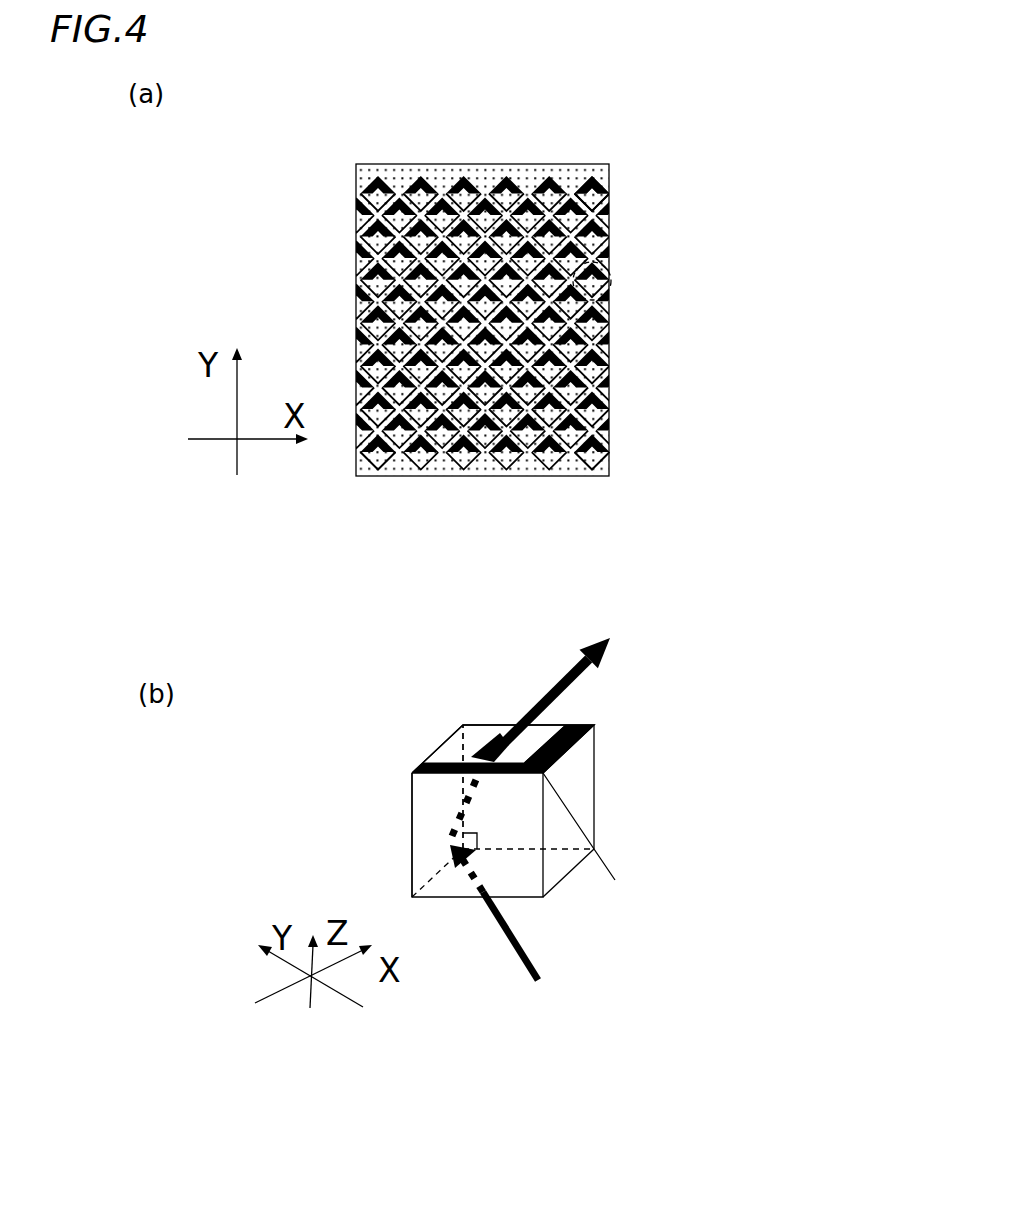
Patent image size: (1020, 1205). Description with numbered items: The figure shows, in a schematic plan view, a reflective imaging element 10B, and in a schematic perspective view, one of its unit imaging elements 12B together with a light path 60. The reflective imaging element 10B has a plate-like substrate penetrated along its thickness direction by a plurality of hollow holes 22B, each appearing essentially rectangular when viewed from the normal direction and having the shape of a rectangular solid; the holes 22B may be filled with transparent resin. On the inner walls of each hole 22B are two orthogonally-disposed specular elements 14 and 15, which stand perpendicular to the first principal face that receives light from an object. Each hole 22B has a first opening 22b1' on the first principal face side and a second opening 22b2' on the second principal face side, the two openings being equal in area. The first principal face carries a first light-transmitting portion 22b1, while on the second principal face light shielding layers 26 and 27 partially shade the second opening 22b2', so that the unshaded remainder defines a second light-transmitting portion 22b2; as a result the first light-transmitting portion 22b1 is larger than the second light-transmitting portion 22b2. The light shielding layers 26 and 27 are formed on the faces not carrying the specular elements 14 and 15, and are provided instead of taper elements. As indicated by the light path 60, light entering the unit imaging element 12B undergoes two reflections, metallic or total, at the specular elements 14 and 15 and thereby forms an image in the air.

The reflective imaging element 10B is at (655, 134).
The unit imaging element 12B is at (610, 286).
The specular element 14 is at (362, 458).
The specular element 15 is at (384, 458).
The first light-transmitting portion 22b1 is at (518, 530).
The second light-transmitting portion 22b2 is at (601, 527).
The first opening 22b1' is at (668, 237).
The second opening 22b2' is at (592, 279).
The hole 22B is at (790, 190).
The light shielding layer 26 is at (600, 446).
The light shielding layer 27 is at (597, 458).
The light path 60 is at (532, 972).